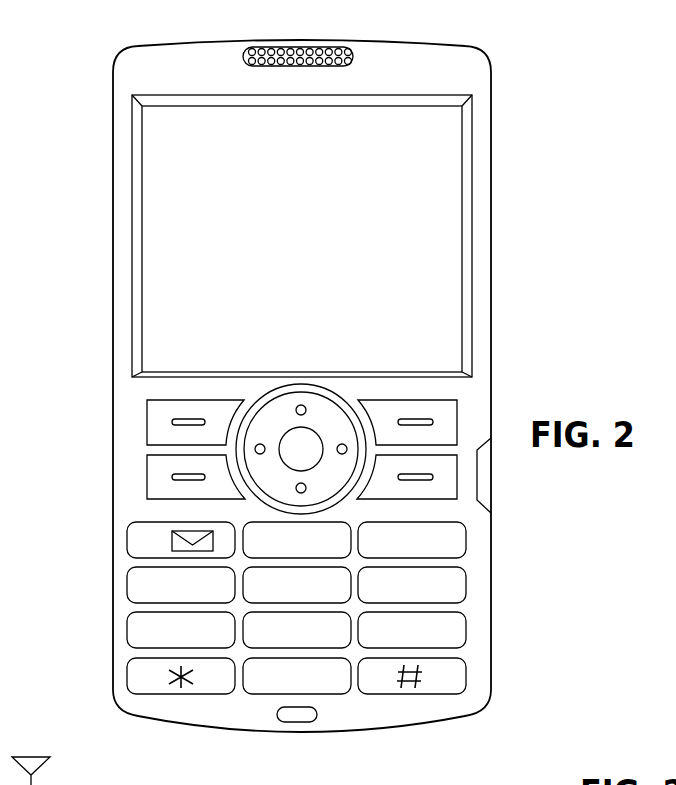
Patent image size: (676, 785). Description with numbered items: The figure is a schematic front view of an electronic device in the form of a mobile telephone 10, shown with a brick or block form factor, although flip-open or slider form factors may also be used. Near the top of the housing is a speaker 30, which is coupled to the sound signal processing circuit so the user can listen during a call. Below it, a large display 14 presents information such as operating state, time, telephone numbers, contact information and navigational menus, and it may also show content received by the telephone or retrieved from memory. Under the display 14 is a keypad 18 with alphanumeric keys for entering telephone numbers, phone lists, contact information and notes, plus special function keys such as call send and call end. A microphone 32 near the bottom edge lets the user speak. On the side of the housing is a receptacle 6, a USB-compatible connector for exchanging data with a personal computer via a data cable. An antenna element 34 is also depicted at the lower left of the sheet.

The mobile telephone 10 is at (82, 113).
The speaker 30 is at (300, 46).
The display 14 is at (160, 222).
The keypad 18 is at (206, 701).
The receptacle 6 is at (511, 477).
The microphone 32 is at (305, 717).
The antenna 34 is at (31, 775).